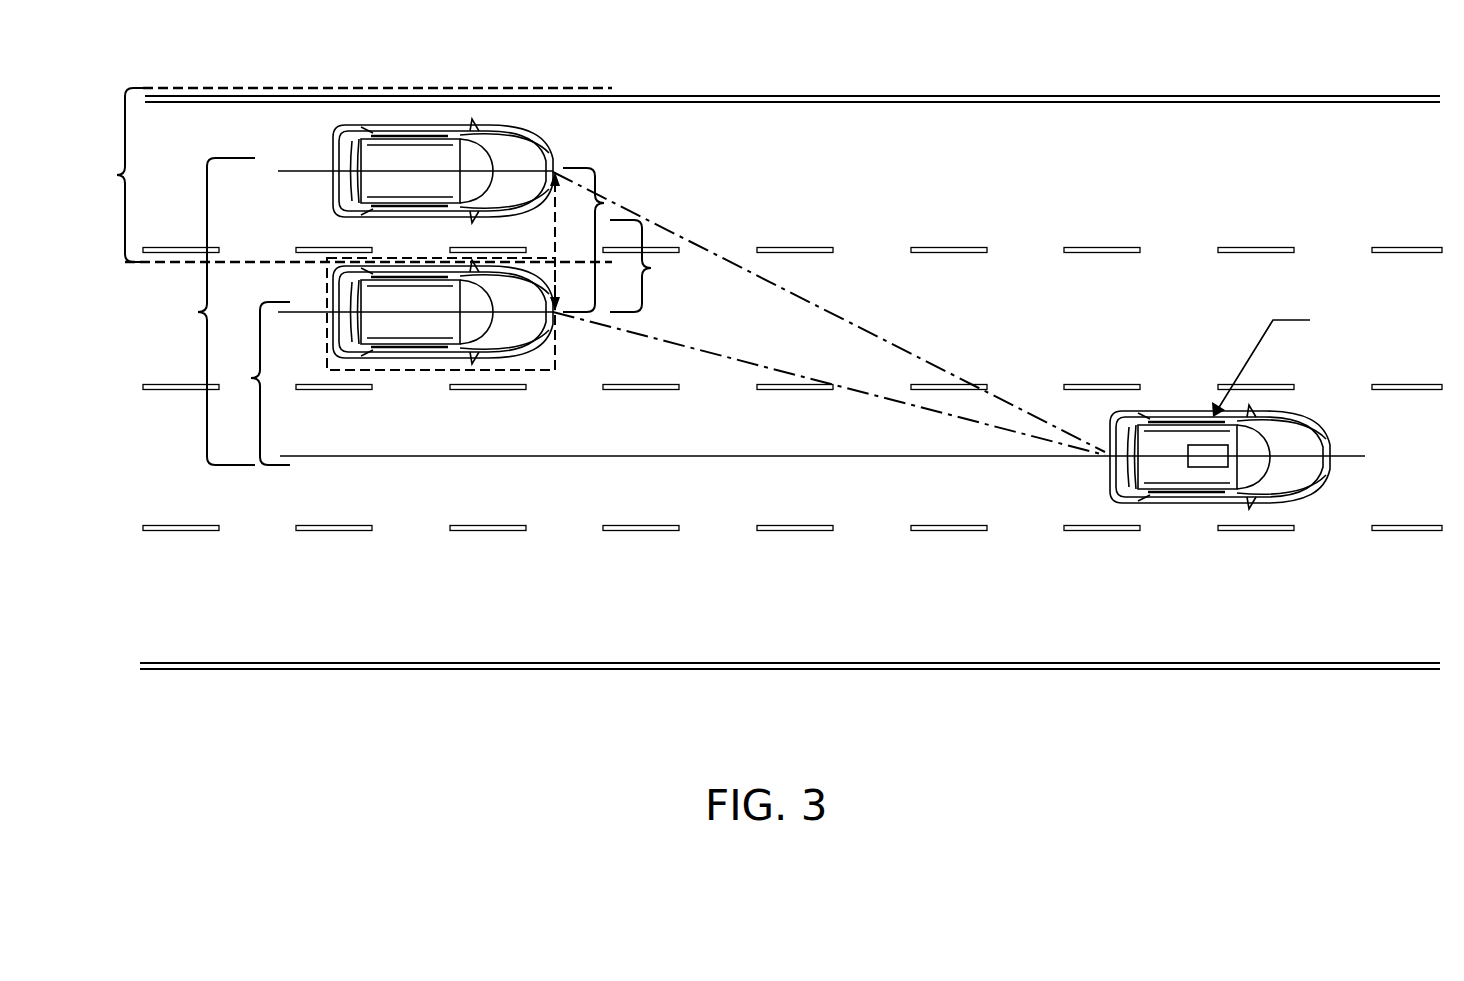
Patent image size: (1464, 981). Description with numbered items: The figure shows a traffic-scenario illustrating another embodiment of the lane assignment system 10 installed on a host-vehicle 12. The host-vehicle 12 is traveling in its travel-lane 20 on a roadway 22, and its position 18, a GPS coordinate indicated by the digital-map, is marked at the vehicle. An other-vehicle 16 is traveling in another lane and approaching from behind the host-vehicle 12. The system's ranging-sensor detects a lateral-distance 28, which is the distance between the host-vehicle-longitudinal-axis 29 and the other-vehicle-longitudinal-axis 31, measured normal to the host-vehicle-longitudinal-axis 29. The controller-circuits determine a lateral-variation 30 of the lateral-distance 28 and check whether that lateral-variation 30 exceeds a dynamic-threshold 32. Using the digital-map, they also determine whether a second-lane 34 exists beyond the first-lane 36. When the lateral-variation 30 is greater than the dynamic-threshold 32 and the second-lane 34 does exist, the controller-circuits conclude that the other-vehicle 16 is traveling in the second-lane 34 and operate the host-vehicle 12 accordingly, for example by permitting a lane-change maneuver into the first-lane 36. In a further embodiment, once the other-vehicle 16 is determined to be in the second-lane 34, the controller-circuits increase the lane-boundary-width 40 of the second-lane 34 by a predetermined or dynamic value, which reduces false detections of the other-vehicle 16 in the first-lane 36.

The lane assignment system 10 is at (1198, 463).
The host-vehicle 12 is at (1233, 503).
The other-vehicle 16 is at (428, 135).
The position 18 is at (1362, 276).
The travel-lane 20 is at (1392, 483).
The roadway 22 is at (316, 680).
The lateral-distance 28 is at (198, 312).
The host-vehicle-longitudinal-axis 29 is at (1340, 460).
The lateral-variation 30 is at (604, 203).
The other-vehicle-longitudinal-axis 31 is at (556, 316).
The dynamic-threshold 32 is at (651, 268).
The second-lane 34 is at (842, 160).
The first-lane 36 is at (950, 285).
The lane-boundary-width 40 is at (117, 175).